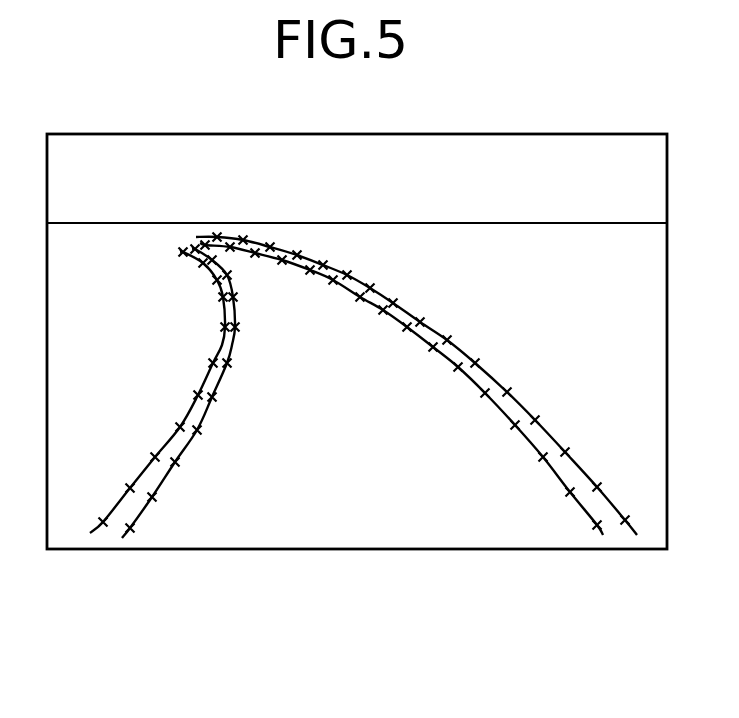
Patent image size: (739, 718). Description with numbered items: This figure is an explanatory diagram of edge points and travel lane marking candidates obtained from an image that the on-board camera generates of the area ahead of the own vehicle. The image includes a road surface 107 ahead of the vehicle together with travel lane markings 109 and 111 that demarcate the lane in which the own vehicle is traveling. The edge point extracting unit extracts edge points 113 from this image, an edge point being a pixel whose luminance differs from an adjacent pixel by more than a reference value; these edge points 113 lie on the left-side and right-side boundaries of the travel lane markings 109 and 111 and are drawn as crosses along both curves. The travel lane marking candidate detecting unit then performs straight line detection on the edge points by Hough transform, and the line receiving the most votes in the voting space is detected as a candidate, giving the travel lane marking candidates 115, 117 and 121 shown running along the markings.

The road surface 107 is at (355, 528).
The travel lane marking 109 is at (208, 378).
The travel lane marking 111 is at (433, 327).
The edge points 113 is at (103, 522).
The travel lane marking candidate 115 is at (222, 347).
The travel lane marking candidate 117 is at (228, 376).
The travel lane marking candidate 121 is at (495, 368).